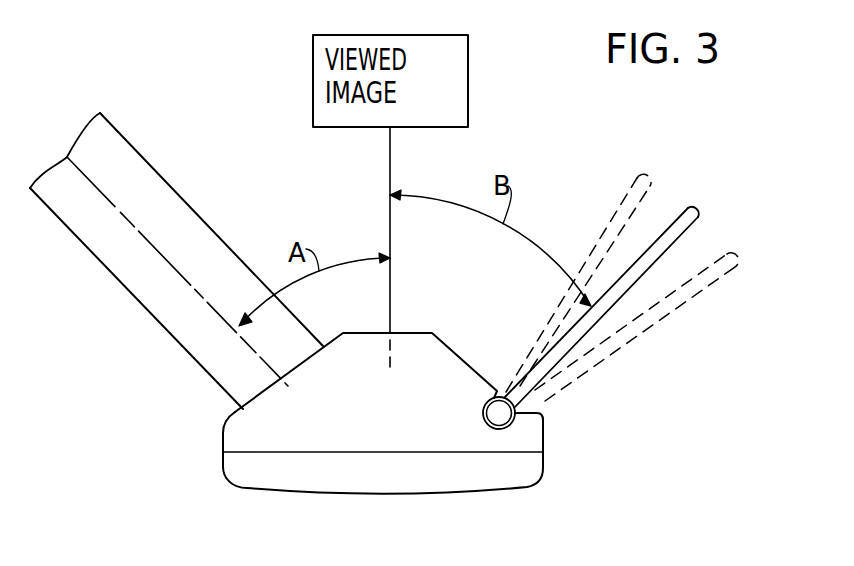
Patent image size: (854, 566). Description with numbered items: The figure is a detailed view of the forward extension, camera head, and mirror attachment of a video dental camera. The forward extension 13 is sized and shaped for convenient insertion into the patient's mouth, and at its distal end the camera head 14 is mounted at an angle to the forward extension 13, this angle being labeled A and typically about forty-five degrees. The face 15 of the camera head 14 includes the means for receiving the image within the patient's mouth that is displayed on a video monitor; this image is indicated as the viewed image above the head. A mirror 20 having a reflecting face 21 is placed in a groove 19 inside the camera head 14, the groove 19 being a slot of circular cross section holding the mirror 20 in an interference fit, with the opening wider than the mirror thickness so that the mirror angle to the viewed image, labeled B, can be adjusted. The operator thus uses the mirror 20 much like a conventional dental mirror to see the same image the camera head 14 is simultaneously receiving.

The forward extension 13 is at (211, 229).
The camera head 14 is at (544, 460).
The face 15 is at (415, 333).
The groove 19 is at (540, 418).
The mirror 20 is at (681, 230).
The reflecting face 21 is at (677, 222).